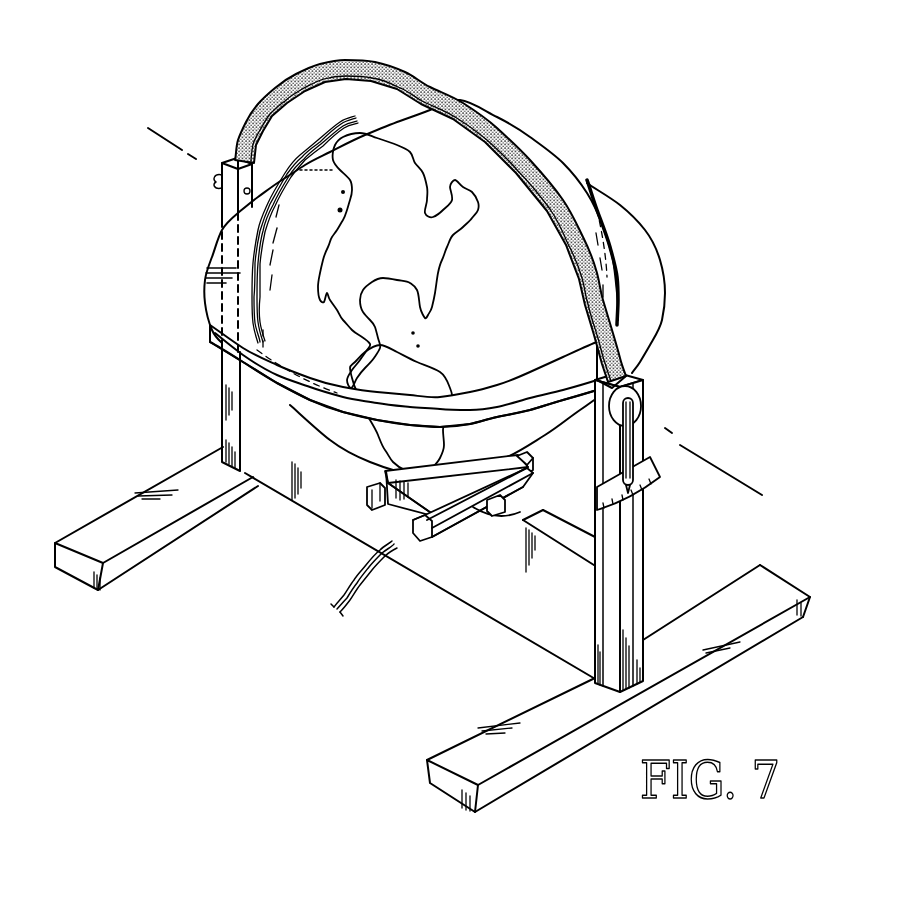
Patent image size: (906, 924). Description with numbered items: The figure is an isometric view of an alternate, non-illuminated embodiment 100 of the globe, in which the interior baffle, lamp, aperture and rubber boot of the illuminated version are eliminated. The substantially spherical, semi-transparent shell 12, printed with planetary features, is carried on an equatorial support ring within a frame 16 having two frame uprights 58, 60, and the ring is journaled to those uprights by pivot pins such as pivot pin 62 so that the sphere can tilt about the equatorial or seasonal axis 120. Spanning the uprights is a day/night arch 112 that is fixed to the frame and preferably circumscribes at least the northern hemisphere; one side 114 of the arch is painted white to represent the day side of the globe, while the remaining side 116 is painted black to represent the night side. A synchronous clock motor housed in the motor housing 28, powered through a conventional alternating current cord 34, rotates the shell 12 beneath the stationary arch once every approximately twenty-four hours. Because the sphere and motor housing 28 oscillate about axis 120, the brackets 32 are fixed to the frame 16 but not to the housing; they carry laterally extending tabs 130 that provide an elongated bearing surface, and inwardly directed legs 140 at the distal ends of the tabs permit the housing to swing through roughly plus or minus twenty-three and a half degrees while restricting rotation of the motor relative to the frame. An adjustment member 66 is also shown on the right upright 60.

The alternate embodiment 100 is at (683, 137).
The shell 12 is at (578, 177).
The frame 16 is at (497, 605).
The motor housing 28 is at (457, 517).
The brackets 32 is at (497, 507).
The alternating current cord 34 is at (360, 603).
The frame upright 58 is at (227, 403).
The frame upright 60 is at (636, 593).
The pivot pin 62 is at (260, 187).
The adjustment slider 66 is at (632, 443).
The day/night arch 112 is at (460, 100).
The day side of arch 114 is at (373, 59).
The night side of arch 116 is at (514, 151).
The equatorial axis 120 is at (747, 480).
The tabs 130 is at (525, 477).
The inwardly directed legs 140 is at (370, 510).